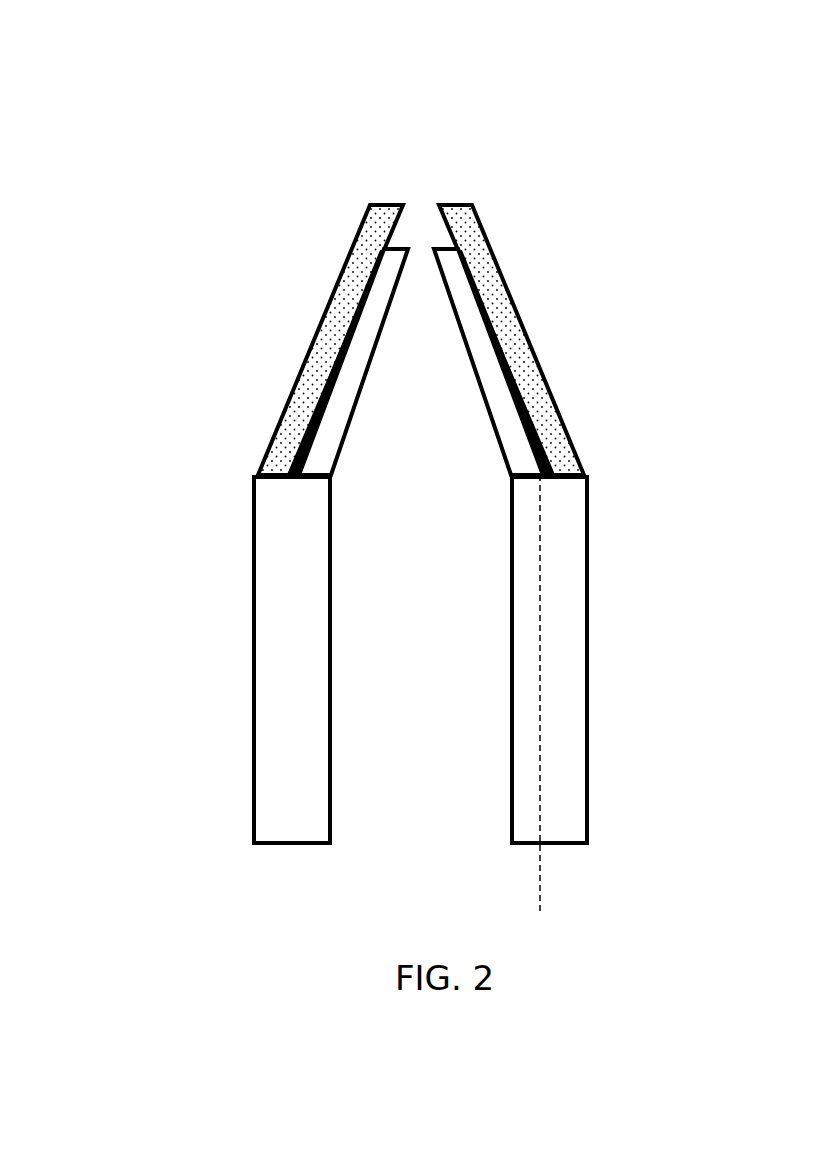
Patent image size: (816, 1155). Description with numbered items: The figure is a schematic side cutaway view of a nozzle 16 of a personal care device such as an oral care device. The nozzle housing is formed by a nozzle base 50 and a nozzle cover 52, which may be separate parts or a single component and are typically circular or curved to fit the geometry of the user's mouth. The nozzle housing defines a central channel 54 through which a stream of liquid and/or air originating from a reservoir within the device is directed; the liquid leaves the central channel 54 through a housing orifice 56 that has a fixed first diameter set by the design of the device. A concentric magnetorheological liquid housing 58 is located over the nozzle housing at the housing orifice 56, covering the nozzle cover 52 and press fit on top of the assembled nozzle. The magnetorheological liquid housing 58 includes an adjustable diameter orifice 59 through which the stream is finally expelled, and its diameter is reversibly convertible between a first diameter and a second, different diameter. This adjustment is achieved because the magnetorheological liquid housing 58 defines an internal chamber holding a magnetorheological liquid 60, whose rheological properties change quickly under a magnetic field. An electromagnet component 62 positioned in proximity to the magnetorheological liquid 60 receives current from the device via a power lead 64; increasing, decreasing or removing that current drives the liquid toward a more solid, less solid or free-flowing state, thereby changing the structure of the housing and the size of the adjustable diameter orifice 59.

The nozzle 16 is at (75, 38).
The nozzle base 50 is at (273, 652).
The nozzle cover 52 is at (505, 435).
The central channel 54 is at (420, 465).
The housing orifice 56 is at (424, 263).
The magnetorheological liquid housing 58 is at (483, 247).
The adjustable diameter orifice 59 is at (423, 193).
The magnetorheological liquid 60 is at (285, 452).
The electromagnet component 62 is at (495, 343).
The power lead 64 is at (538, 772).